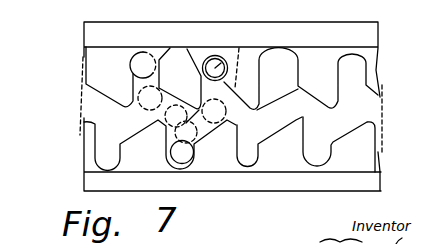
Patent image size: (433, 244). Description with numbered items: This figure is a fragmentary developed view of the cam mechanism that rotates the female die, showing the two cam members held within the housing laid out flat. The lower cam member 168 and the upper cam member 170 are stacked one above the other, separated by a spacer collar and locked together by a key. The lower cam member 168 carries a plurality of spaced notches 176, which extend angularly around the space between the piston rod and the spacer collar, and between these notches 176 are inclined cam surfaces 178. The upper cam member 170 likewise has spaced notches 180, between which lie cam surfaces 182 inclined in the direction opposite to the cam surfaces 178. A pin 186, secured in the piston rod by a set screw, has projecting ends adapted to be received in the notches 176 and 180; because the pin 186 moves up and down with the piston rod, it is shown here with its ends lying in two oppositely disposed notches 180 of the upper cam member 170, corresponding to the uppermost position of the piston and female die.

The lower cam member 168 is at (96, 184).
The upper cam member 170 is at (100, 33).
The notches 176 is at (300, 166).
The inclined cam surfaces 178 is at (340, 120).
The notches 180 is at (178, 44).
The cam surfaces 182 is at (275, 116).
The pin 186 is at (227, 52).